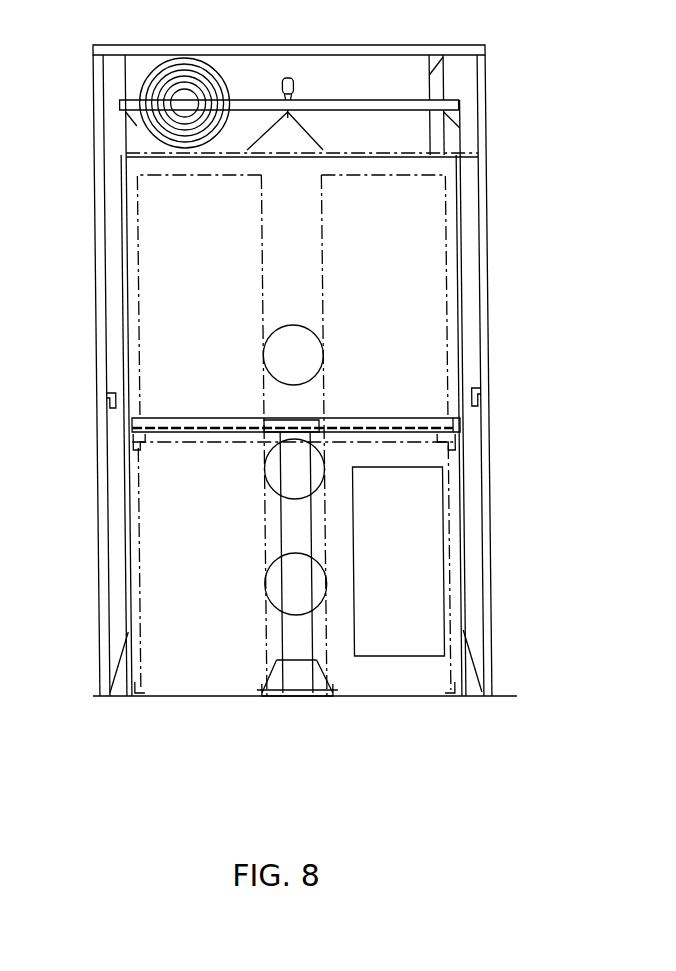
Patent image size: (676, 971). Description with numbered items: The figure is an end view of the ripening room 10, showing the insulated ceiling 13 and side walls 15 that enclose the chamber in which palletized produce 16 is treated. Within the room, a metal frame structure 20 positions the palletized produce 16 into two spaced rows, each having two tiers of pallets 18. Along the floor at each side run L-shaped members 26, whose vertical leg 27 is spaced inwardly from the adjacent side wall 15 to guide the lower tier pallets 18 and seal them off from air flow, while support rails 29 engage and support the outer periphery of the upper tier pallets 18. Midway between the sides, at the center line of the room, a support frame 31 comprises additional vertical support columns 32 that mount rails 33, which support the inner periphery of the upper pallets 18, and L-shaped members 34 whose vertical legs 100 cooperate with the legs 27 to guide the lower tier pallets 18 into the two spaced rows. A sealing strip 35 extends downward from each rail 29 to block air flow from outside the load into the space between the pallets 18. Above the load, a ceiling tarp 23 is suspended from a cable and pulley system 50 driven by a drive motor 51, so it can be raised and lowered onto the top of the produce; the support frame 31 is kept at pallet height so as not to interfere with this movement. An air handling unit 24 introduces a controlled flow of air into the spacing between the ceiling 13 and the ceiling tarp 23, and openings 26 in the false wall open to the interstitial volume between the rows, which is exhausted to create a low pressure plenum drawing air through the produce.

The ripening room 10 is at (507, 205).
The ceiling 13 is at (317, 45).
The side walls 15 is at (94, 590).
The palletized produce 16 is at (261, 268).
The pallets 18 is at (218, 416).
The metal frame structure 20 is at (460, 533).
The ceiling tarp 23 is at (264, 158).
The air handling unit 24 is at (447, 57).
The L-shaped members 26 is at (297, 323).
The vertical leg 27 is at (141, 695).
The support rails 29 is at (136, 422).
The support frames 31 is at (307, 637).
The additional vertical support columns 32 is at (276, 523).
The rails 33 is at (305, 418).
The L-shaped members 34 is at (268, 696).
The sealing strip 35 is at (139, 442).
The cable and pulley system 50 is at (305, 133).
The drive motor 51 is at (286, 77).
The vertical legs 100 is at (250, 695).